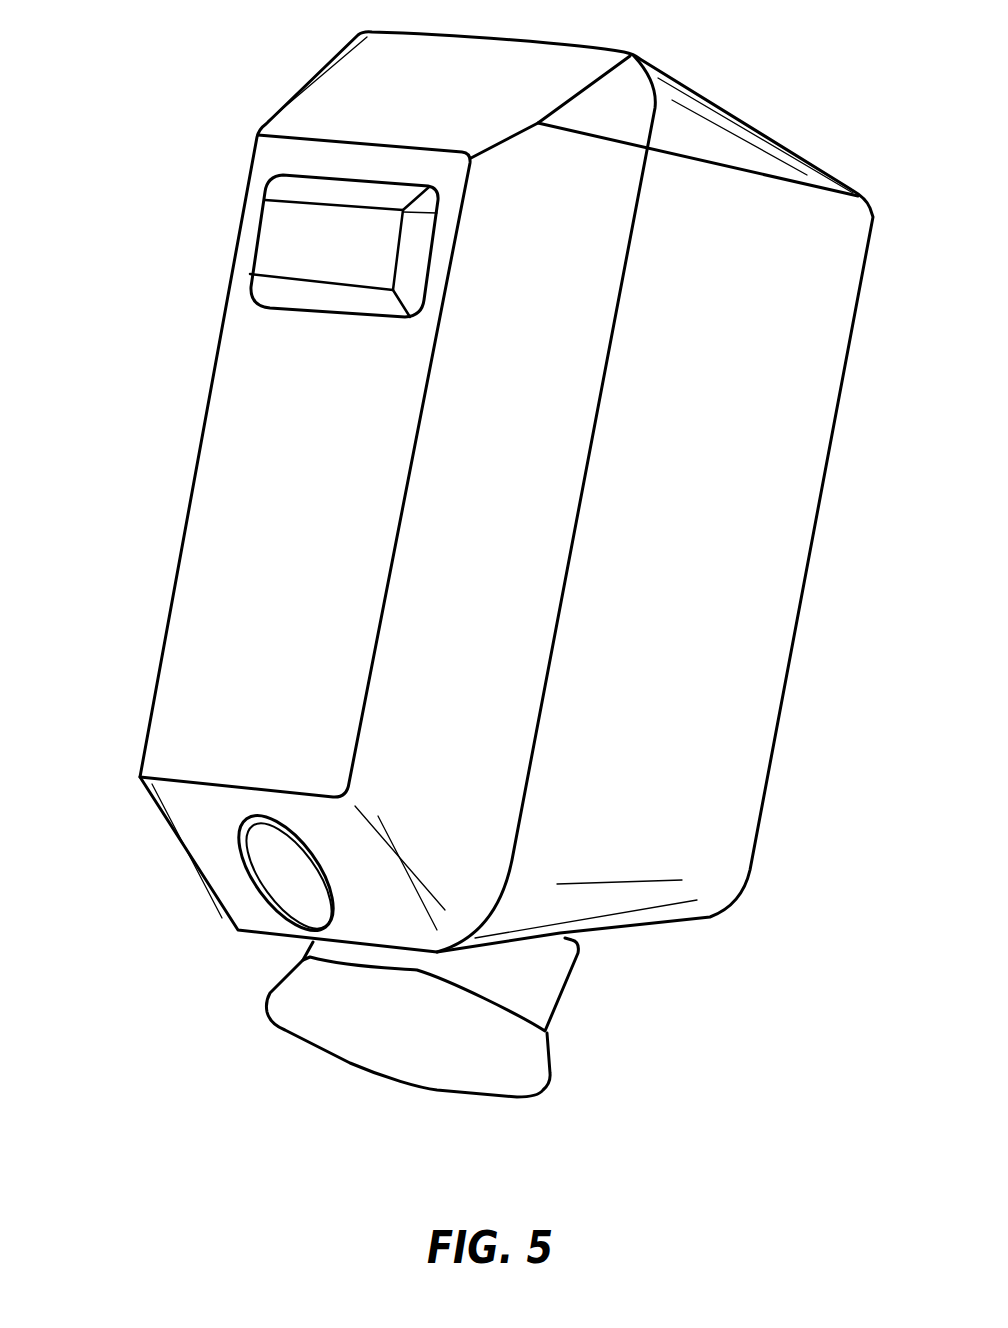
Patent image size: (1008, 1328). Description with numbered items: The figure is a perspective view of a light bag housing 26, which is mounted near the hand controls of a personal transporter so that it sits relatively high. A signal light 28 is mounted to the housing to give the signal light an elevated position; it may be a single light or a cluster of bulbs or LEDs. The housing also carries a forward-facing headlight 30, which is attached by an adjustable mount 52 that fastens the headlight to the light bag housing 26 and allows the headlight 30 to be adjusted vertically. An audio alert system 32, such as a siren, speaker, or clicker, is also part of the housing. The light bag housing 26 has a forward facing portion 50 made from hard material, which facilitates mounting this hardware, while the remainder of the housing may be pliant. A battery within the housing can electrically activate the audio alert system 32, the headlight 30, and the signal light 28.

The light bag housing 26 is at (683, 123).
The signal light 28 is at (292, 238).
The headlight 30 is at (513, 1080).
The audio alert system 32 is at (275, 870).
The forward facing portion 50 is at (220, 648).
The adjustable mount 52 is at (543, 983).